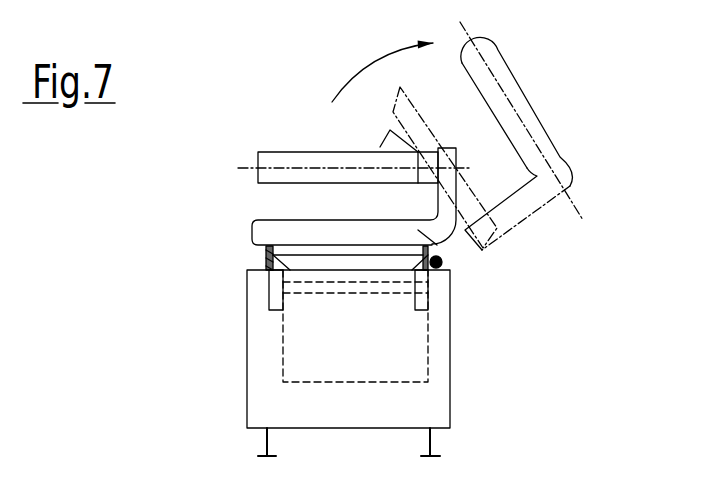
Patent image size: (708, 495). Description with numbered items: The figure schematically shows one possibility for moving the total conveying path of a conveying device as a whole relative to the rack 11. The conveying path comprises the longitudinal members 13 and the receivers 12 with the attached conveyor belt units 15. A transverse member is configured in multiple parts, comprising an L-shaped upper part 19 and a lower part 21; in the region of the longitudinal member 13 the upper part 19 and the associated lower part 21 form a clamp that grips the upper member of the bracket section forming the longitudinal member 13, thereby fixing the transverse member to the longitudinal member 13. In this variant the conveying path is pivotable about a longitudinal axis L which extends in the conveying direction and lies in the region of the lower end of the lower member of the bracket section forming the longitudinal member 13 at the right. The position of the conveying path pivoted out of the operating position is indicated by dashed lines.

The rack 11 is at (236, 331).
The receiver 12 is at (485, 215).
The longitudinal member 13 is at (268, 255).
The conveyor belt unit 15 is at (267, 123).
The upper part 19 is at (255, 228).
The lower part 21 is at (262, 271).
The longitudinal axis L is at (444, 266).